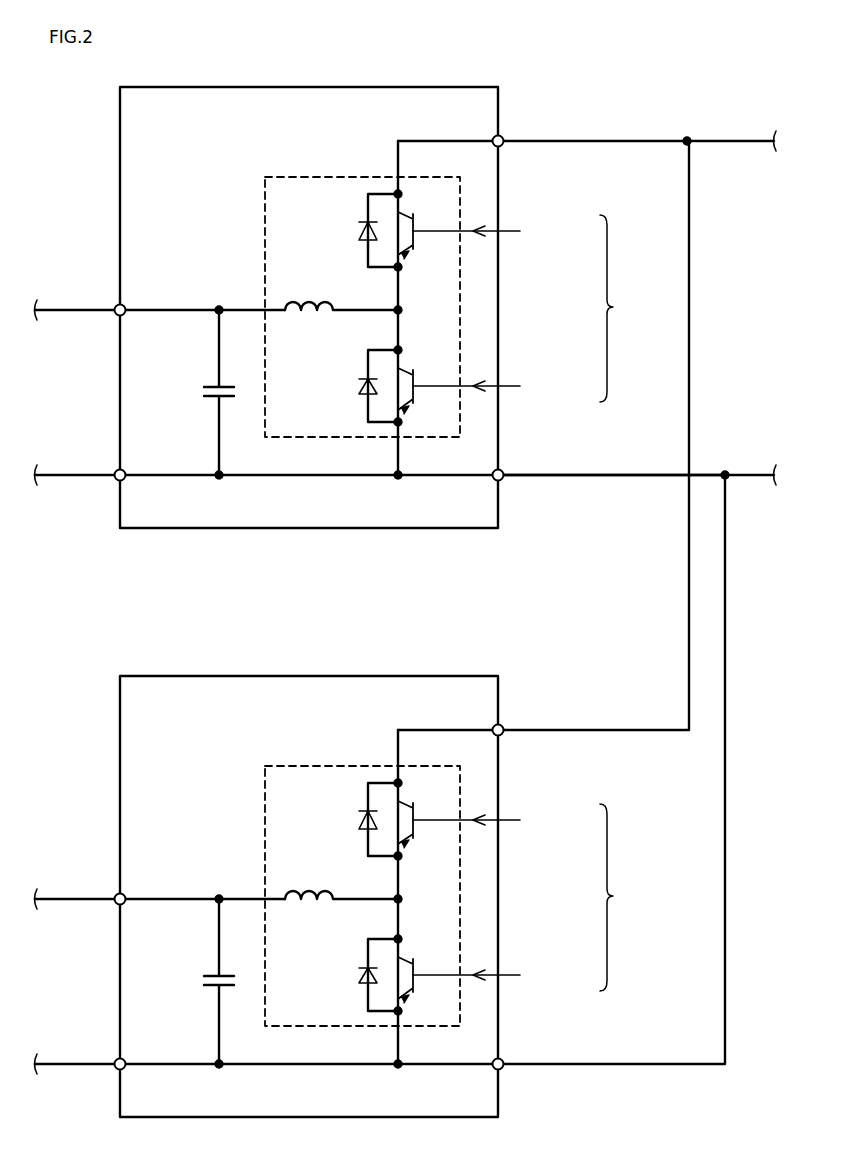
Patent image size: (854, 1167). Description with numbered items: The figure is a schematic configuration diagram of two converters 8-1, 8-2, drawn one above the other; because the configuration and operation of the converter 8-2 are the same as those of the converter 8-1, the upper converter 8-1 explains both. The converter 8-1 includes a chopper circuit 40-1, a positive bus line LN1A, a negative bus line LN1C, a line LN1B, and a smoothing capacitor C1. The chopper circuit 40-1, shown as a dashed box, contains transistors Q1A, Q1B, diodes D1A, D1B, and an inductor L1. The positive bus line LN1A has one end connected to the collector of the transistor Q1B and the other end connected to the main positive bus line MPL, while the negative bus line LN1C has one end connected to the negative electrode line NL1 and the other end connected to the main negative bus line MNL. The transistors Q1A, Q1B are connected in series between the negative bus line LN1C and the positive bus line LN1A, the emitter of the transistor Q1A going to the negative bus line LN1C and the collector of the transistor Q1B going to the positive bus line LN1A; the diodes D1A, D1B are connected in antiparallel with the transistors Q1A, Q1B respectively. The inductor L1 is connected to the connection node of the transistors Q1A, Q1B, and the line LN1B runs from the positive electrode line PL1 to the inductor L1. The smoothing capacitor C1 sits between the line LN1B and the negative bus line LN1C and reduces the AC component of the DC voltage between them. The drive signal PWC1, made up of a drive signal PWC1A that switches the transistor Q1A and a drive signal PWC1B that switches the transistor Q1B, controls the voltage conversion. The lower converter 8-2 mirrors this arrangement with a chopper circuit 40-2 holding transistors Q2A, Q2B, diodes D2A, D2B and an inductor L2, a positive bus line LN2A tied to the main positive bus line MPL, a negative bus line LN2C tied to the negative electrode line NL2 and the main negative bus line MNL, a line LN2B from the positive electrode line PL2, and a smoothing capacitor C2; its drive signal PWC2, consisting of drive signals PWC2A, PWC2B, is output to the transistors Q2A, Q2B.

The converter 8-1 is at (463, 87).
The converter 8-2 is at (317, 883).
The chopper circuit 40-1 is at (297, 177).
The chopper circuit 40-2 is at (362, 875).
The positive electrode line PL1 is at (67, 310).
The positive electrode line PL2 is at (127, 883).
The negative electrode line NL1 is at (67, 475).
The negative electrode line NL2 is at (217, 1048).
The positive bus line LN1A is at (542, 132).
The line LN1B is at (224, 300).
The negative bus line LN1C is at (559, 465).
The positive bus line LN2A is at (451, 721).
The line LN2B is at (224, 889).
The negative bus line LN2C is at (449, 1054).
The main positive bus line MPL is at (752, 141).
The main negative bus line MNL is at (753, 475).
The smoothing capacitor C1 is at (211, 386).
The smoothing capacitor C2 is at (203, 981).
The inductor L1 is at (343, 295).
The inductor L2 is at (343, 884).
The diode D1A is at (362, 386).
The diode D1B is at (362, 230).
The diode D2A is at (362, 975).
The diode D2B is at (362, 819).
The transistor Q1A is at (421, 386).
The transistor Q1B is at (421, 230).
The transistor Q2A is at (421, 975).
The transistor Q2B is at (421, 819).
The drive signal PWC1 is at (635, 308).
The drive signal PWC1A is at (501, 386).
The drive signal PWC1B is at (500, 231).
The drive signal PWC2 is at (635, 897).
The drive signal PWC2A is at (501, 975).
The drive signal PWC2B is at (500, 820).